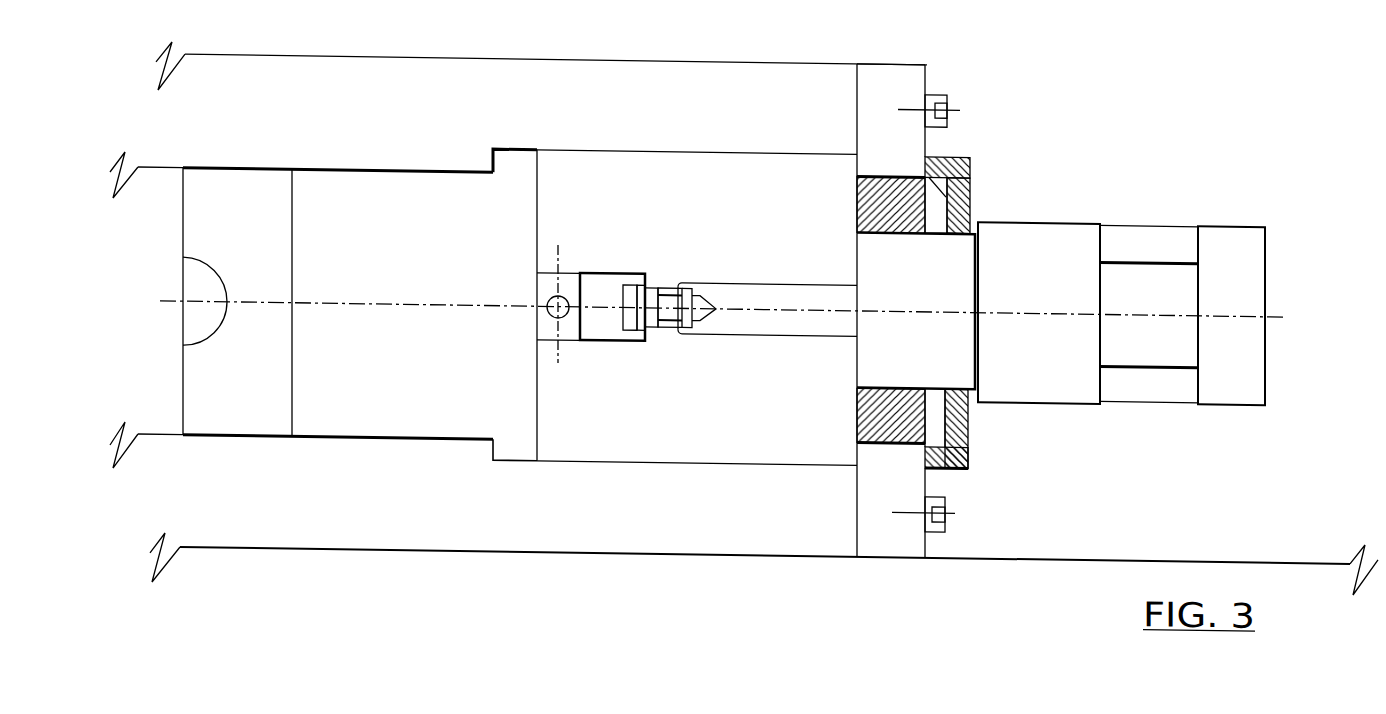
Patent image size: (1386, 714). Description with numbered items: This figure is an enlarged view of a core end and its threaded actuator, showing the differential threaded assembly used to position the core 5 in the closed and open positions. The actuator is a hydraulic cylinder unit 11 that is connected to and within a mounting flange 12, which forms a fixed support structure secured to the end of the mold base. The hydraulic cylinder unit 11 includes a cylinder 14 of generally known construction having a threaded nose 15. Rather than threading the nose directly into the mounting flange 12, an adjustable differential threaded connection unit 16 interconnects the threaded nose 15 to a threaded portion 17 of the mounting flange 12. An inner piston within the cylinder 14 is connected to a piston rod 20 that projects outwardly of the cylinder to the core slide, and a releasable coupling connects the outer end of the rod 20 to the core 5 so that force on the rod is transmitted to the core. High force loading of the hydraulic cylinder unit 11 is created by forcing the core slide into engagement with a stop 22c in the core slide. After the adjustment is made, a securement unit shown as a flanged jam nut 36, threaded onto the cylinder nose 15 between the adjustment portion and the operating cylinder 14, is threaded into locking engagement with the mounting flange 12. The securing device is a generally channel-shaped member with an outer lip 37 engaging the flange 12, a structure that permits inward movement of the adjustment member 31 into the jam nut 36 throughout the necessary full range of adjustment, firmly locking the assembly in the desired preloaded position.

The core 5 is at (428, 259).
The stop 22c is at (492, 151).
The piston rod 20 is at (798, 314).
The mounting flange 12 is at (862, 148).
The adjustment member 31 is at (862, 200).
The outer lip 37 is at (970, 146).
The flanged jam nut 36 is at (970, 191).
The threaded nose 15 is at (887, 340).
The adjustable differential threaded connection unit 16 is at (855, 403).
The threaded portion 17 is at (897, 434).
The cylinder 14 is at (1058, 278).
The hydraulic cylinder unit 11 is at (1128, 372).